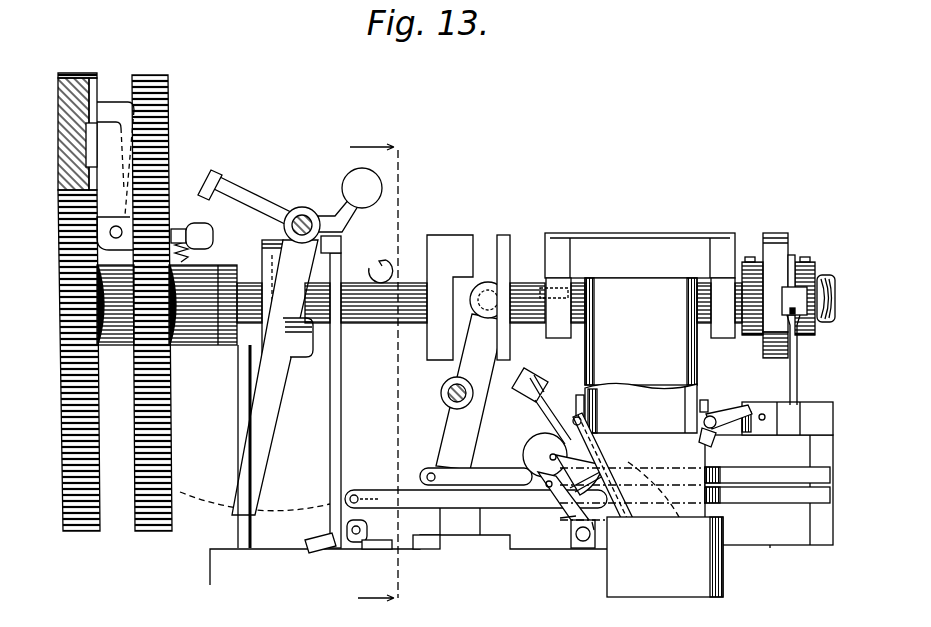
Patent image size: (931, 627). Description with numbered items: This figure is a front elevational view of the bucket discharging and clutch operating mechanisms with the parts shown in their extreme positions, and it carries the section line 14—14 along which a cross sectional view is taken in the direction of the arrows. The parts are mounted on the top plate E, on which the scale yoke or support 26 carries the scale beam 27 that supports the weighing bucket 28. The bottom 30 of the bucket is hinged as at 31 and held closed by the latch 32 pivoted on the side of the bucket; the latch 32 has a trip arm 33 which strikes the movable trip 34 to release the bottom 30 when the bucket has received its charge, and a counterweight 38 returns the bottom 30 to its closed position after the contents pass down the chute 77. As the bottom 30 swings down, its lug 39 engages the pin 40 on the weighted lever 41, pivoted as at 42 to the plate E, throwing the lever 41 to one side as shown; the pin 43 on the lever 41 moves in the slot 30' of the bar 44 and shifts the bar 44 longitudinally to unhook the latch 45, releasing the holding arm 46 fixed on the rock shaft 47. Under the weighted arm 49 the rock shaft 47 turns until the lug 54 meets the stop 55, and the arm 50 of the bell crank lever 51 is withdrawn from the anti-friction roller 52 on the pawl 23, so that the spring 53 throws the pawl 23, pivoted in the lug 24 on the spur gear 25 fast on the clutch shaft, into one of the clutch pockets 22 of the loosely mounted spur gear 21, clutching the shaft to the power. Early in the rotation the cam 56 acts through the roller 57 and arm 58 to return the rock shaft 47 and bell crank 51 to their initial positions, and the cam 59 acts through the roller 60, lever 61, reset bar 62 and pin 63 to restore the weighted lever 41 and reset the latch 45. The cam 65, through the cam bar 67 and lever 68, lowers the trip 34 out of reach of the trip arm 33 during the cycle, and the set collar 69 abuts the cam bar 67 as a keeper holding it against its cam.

The section line 14— 14 is at (825, 275).
The spur gear 21 is at (98, 80).
The clutch pockets 22 is at (88, 78).
The pawl 23 is at (126, 110).
The lug 24 is at (160, 88).
The spur gear 25 is at (115, 142).
The scale yoke or support 26 is at (820, 519).
The scale beam 27 is at (718, 232).
The weighing bucket 28 is at (641, 331).
The bottom of the bucket 30 is at (610, 475).
The slot 30' is at (695, 480).
The hinge 31 is at (636, 408).
The latch 32 is at (709, 438).
The trip arm 33 is at (724, 412).
The movable trip 34 is at (751, 424).
The counterweight 38 is at (525, 397).
The lug 39 is at (553, 500).
The pin 40 is at (550, 458).
The weighted lever 41 is at (576, 516).
The pivot 42 is at (582, 542).
The pin 43 is at (592, 522).
The bar 44 is at (392, 508).
The latch 45 is at (320, 538).
The holding arm 46 is at (252, 449).
The rock shaft 47 is at (303, 218).
The weighted arm 49 is at (371, 203).
The arm of the bell crank lever 50 is at (216, 180).
The bell crank lever 51 is at (294, 207).
The anti-friction roller 52 is at (213, 234).
The spring 53 is at (183, 263).
The lug 54 is at (341, 244).
The stop 55 is at (342, 351).
The cam 56 is at (257, 412).
The roller 57 is at (295, 360).
The arm 58 is at (307, 280).
The cam 59 is at (504, 234).
The roller 60 is at (513, 258).
The lever 61 is at (441, 397).
The reset bar 62 is at (428, 472).
The pin 63 is at (546, 487).
The cam 65 is at (772, 232).
The cam bar 67 is at (793, 255).
The lever 68 is at (797, 392).
The set collar 69 is at (803, 330).
The chute 77 is at (723, 592).
The top plate E is at (770, 546).